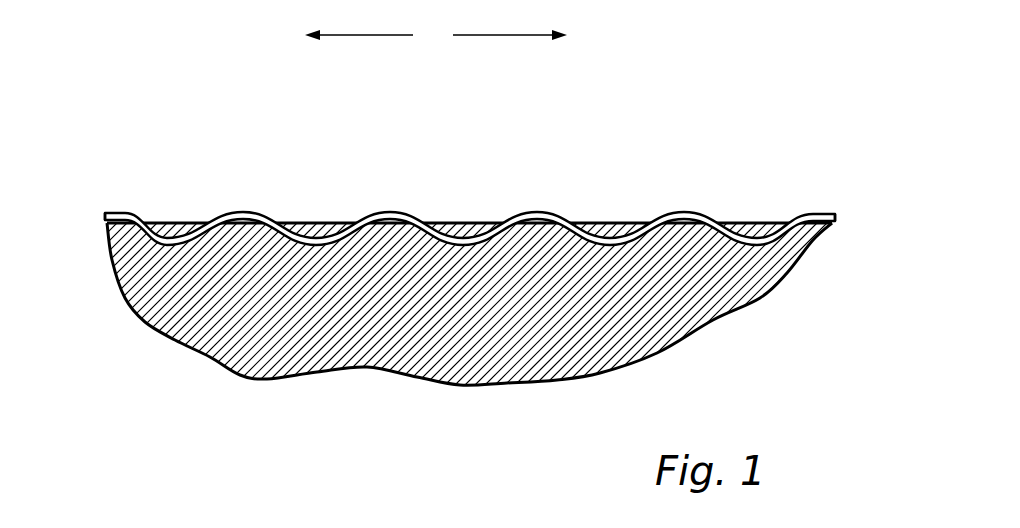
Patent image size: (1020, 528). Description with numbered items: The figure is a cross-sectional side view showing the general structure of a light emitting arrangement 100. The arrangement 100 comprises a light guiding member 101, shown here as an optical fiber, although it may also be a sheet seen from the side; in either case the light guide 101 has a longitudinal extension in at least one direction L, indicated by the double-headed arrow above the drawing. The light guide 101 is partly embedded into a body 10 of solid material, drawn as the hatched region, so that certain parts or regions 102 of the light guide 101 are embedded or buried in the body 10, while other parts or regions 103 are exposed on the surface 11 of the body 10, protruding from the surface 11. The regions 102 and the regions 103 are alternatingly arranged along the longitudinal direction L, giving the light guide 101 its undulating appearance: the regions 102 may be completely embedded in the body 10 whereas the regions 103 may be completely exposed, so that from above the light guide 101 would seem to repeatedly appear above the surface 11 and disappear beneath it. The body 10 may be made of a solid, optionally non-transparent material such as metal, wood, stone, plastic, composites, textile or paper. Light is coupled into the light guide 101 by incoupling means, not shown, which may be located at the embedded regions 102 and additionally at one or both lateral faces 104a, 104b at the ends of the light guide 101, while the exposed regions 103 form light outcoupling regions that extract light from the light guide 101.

The light emitting arrangement 100 is at (510, 221).
The body 10 is at (176, 268).
The surface 11 is at (178, 218).
The light guiding member 101 is at (567, 216).
The embedded regions 102 is at (725, 263).
The exposed regions 103 is at (254, 194).
The lateral face 104a is at (104, 214).
The lateral face 104b is at (836, 216).
The longitudinal direction L is at (436, 36).